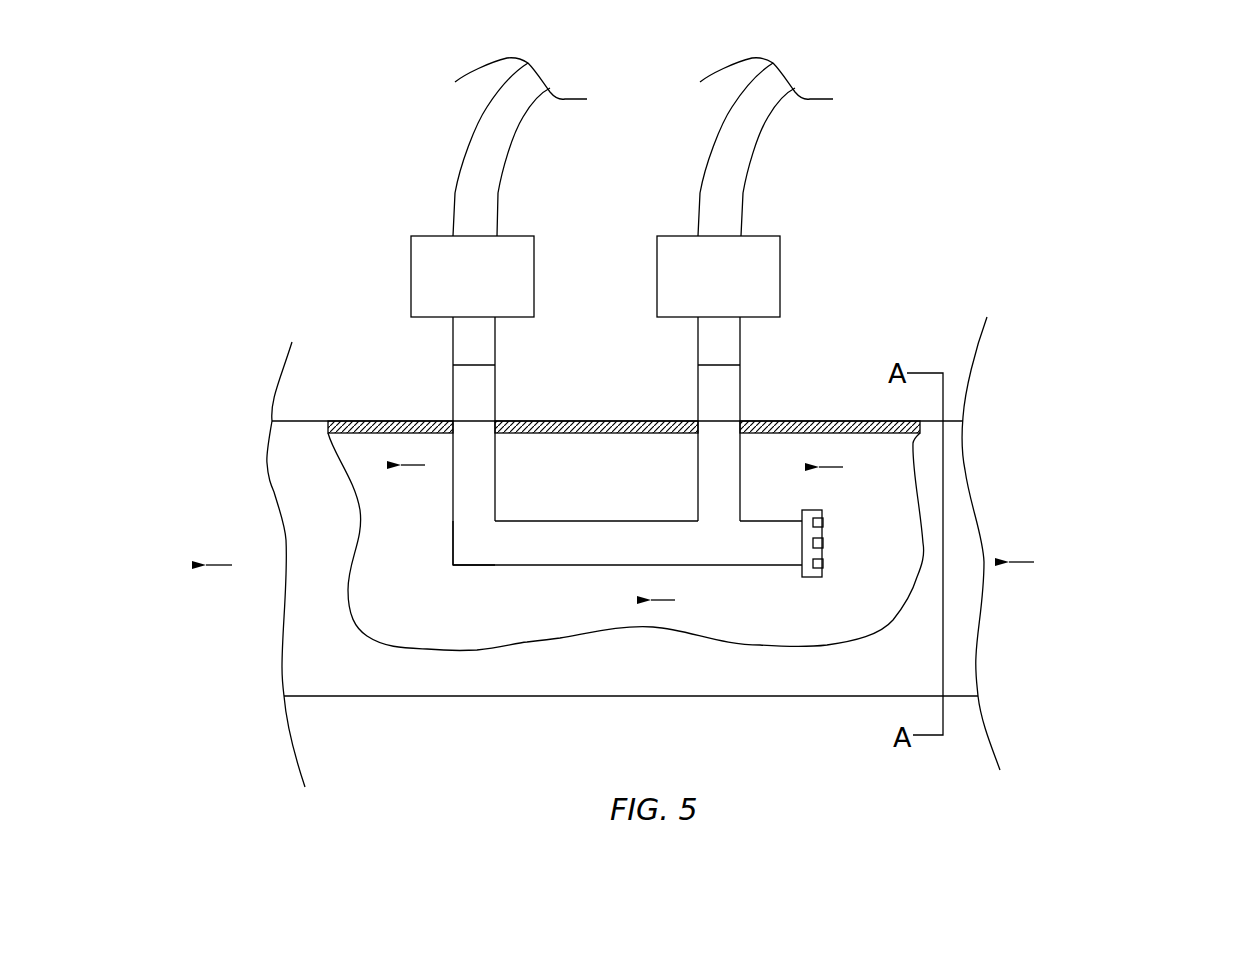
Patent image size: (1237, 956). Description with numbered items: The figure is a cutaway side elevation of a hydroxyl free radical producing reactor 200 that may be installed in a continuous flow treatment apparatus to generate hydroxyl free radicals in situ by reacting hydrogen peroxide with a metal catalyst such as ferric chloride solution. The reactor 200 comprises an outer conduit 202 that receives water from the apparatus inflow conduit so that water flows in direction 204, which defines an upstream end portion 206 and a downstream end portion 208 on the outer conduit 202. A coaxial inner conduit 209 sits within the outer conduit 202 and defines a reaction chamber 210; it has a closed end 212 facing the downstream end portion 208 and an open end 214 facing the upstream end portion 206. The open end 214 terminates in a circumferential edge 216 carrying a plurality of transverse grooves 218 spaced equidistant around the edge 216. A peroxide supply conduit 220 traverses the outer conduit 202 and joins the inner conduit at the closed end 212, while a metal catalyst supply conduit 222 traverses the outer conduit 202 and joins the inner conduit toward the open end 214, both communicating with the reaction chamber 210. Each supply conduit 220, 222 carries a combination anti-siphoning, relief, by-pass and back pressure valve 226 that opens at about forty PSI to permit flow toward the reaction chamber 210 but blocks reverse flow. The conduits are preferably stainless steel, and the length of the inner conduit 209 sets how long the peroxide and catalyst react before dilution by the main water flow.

The hydroxyl free radical producing reactor 200 is at (992, 152).
The outer conduit 202 is at (397, 420).
The direction of water flow 204 is at (610, 538).
The upstream end portion 206 is at (976, 485).
The downstream end portion 208 is at (274, 492).
The coaxial inner conduit 209 is at (592, 567).
The reaction chamber 210 is at (763, 543).
The closed end 212 is at (453, 560).
The open end 214 is at (812, 573).
The circumferential edge 216 is at (822, 550).
The transverse grooves 218 is at (820, 522).
The peroxide supply conduit 220 is at (495, 398).
The metal catalyst supply conduit 222 is at (740, 400).
The combination anti-siphoning, relief, by-pass and back pressure valve 226 is at (533, 237).